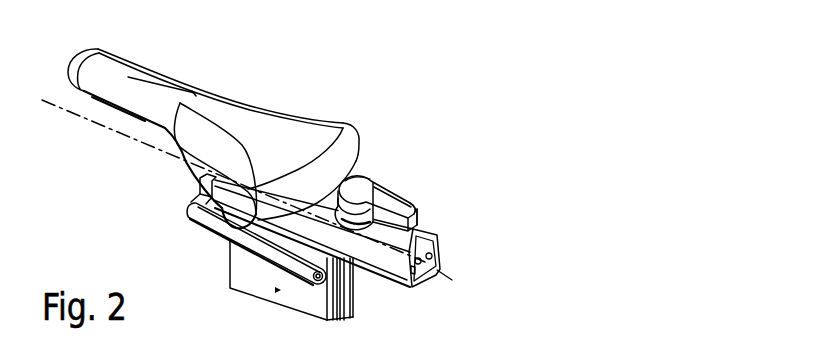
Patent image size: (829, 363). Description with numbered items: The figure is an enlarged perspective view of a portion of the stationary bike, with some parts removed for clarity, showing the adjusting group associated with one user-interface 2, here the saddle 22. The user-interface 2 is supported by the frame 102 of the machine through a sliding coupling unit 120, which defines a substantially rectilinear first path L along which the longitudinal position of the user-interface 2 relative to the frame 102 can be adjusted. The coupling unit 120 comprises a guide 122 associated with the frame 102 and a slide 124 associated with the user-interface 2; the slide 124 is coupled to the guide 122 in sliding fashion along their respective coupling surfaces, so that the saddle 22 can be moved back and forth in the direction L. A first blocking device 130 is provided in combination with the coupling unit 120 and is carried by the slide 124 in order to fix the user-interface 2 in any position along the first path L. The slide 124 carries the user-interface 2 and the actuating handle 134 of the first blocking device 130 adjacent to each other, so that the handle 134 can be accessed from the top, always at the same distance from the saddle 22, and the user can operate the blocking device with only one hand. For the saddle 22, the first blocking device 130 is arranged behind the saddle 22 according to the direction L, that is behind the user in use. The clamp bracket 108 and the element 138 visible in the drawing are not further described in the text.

The user-interface 2 is at (213, 134).
The saddle 22 is at (232, 118).
The frame 102 is at (260, 273).
The clamp bracket 108 is at (200, 181).
The sliding coupling unit 120 is at (430, 282).
The guide 122 is at (388, 270).
The slide 124 is at (427, 220).
The actuating handle 134 is at (365, 182).
The first blocking device 130 is at (495, 177).
The locking direction 138 is at (431, 175).
The first path L is at (55, 101).